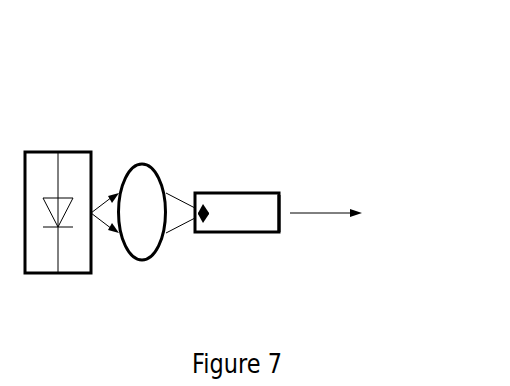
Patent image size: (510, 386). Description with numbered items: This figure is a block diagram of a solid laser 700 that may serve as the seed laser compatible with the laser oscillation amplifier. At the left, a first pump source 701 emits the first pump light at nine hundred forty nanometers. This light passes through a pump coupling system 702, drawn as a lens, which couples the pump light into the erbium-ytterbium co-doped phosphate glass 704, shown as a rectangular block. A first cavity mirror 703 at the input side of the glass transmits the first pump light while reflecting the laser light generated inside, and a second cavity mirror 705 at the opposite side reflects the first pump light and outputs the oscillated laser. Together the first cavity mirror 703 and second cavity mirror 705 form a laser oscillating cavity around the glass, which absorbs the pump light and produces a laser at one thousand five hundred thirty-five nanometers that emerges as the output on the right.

The solid laser 700 is at (402, 97).
The first pump source 701 is at (42, 162).
The pump coupling system 702 is at (142, 185).
The first cavity mirror 703 is at (195, 234).
The erbium-ytterbium co-doped phosphate glass 704 is at (237, 207).
The second cavity mirror 705 is at (280, 231).